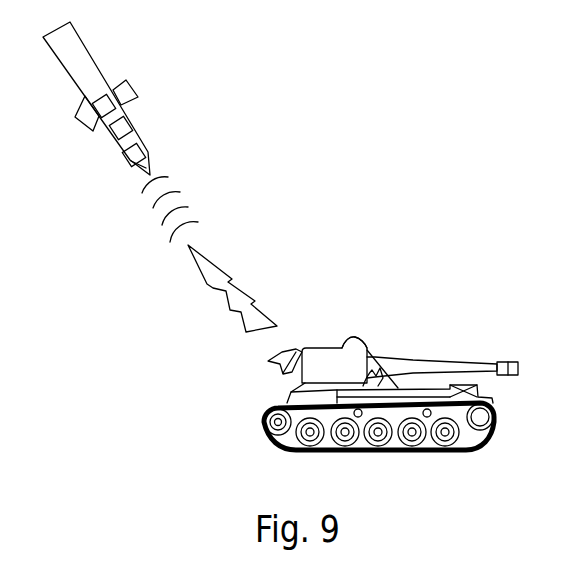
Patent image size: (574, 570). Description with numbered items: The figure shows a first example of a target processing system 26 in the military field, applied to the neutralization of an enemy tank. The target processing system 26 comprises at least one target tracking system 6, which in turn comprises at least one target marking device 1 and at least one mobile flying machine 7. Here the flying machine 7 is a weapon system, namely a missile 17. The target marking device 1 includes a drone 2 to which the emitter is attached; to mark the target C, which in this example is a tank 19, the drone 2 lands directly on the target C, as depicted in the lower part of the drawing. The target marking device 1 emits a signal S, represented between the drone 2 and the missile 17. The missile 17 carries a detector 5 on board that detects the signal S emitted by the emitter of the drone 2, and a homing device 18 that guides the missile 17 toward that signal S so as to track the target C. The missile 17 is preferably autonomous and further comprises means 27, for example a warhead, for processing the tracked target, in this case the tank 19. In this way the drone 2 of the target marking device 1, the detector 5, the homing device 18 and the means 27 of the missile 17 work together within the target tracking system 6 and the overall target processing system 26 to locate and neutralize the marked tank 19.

The flying machine 7 is at (141, 121).
The detector 5 is at (127, 112).
The means for processing a tracked target 27 is at (133, 125).
The homing device 18 is at (144, 146).
The missile 17 is at (84, 97).
The target tracking system 6 is at (121, 224).
The signal S is at (233, 282).
The target processing system 26 is at (300, 109).
The target marking device 1 is at (339, 345).
The tank 19 is at (365, 347).
The target C is at (410, 314).
The drone 2 is at (277, 362).